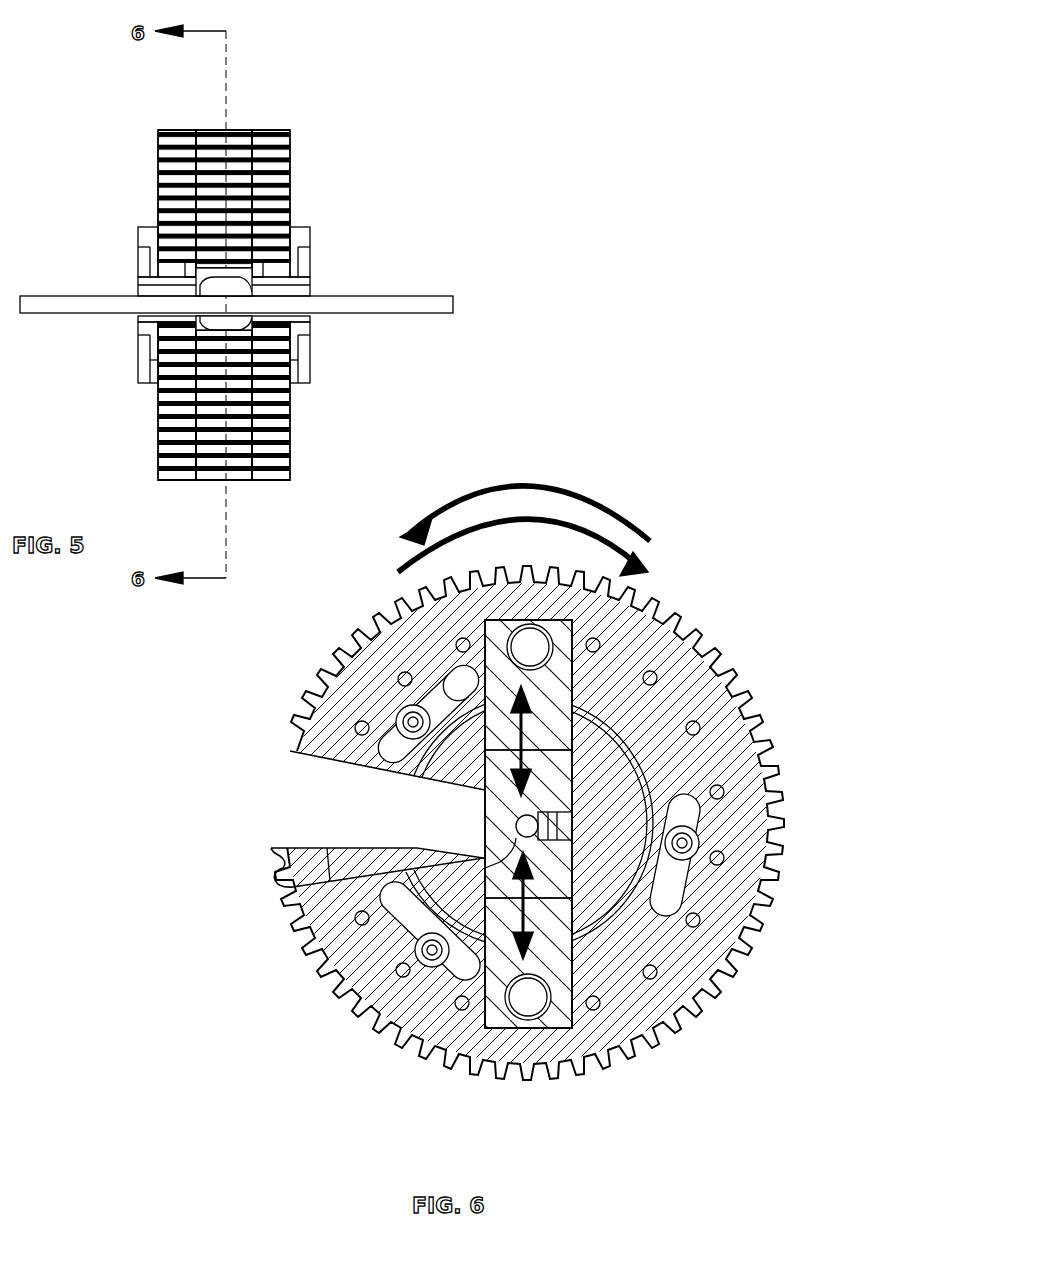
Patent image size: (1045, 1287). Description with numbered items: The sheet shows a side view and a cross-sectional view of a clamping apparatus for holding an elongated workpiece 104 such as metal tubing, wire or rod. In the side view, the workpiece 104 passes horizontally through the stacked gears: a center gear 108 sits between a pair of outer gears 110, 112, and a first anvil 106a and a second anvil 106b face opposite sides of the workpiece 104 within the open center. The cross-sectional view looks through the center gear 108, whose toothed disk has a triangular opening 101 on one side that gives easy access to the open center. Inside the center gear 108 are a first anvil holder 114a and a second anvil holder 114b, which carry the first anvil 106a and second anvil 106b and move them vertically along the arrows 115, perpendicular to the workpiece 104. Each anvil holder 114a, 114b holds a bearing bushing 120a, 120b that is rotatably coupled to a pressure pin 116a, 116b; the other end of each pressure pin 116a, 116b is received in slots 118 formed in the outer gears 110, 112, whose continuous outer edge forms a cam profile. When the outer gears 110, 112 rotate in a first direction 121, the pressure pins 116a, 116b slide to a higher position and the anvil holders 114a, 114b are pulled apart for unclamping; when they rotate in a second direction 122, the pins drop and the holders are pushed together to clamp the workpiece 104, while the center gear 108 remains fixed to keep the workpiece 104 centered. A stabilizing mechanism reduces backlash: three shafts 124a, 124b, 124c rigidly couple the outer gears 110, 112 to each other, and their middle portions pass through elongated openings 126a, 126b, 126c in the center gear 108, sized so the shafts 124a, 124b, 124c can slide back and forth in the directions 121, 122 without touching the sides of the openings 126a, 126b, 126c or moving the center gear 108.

In FIG. 6, the triangular opening 101 is at (308, 790).
In FIG. 5, the workpiece 104 is at (443, 307).
In FIG. 6, the workpiece 104 is at (516, 828).
In FIG. 5, the first anvil 106a is at (238, 287).
In FIG. 6, the first anvil 106a is at (500, 798).
In FIG. 5, the second anvil 106b is at (240, 322).
In FIG. 6, the second anvil 106b is at (505, 845).
In FIG. 5, the center gear 108 is at (240, 130).
In FIG. 6, the center gear 108 is at (688, 645).
In FIG. 5, the outer gear 110 is at (175, 150).
In FIG. 5, the outer gear 112 is at (277, 170).
In FIG. 6, the anvil holder 114a is at (558, 750).
In FIG. 6, the anvil holder 114b is at (560, 917).
In FIG. 6, the arrows 115 is at (517, 731).
In FIG. 6, the pressure pin 116a is at (532, 652).
In FIG. 6, the pressure pin 116b is at (528, 1000).
In FIG. 6, the slots 118 is at (288, 848).
In FIG. 6, the bearing bushing 120a is at (530, 650).
In FIG. 6, the bearing bushing 120b is at (527, 997).
In FIG. 6, the first direction 121 is at (641, 568).
In FIG. 6, the second direction 122 is at (648, 543).
In FIG. 6, the shaft 124a is at (412, 722).
In FIG. 6, the shaft 124b is at (433, 962).
In FIG. 6, the shaft 124c is at (688, 840).
In FIG. 6, the opening 126a is at (430, 677).
In FIG. 6, the opening 126b is at (390, 920).
In FIG. 6, the opening 126c is at (683, 888).